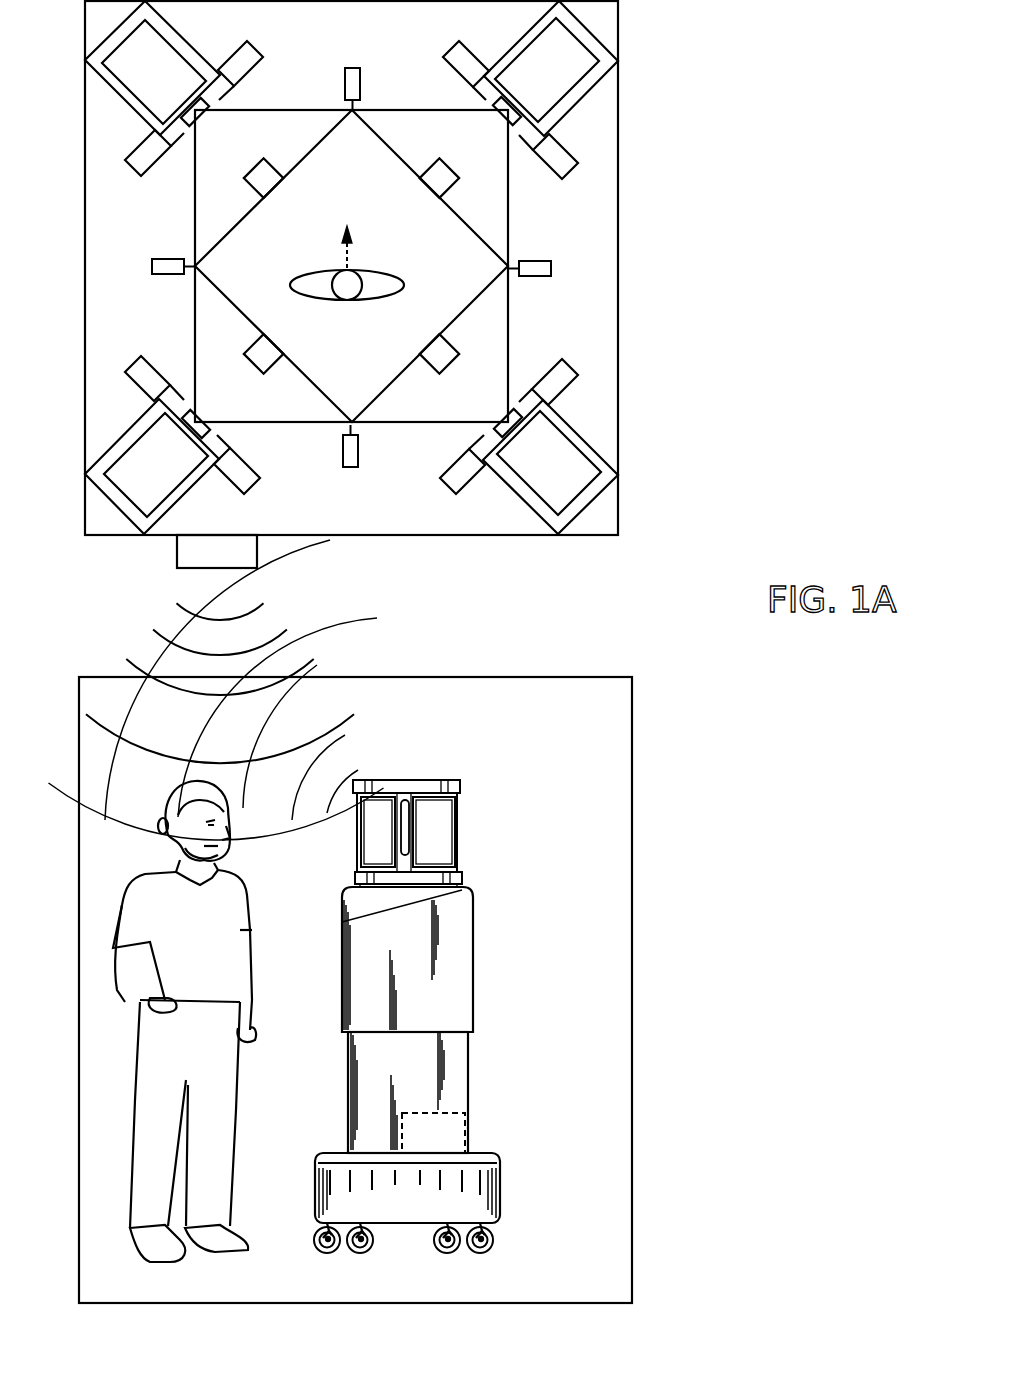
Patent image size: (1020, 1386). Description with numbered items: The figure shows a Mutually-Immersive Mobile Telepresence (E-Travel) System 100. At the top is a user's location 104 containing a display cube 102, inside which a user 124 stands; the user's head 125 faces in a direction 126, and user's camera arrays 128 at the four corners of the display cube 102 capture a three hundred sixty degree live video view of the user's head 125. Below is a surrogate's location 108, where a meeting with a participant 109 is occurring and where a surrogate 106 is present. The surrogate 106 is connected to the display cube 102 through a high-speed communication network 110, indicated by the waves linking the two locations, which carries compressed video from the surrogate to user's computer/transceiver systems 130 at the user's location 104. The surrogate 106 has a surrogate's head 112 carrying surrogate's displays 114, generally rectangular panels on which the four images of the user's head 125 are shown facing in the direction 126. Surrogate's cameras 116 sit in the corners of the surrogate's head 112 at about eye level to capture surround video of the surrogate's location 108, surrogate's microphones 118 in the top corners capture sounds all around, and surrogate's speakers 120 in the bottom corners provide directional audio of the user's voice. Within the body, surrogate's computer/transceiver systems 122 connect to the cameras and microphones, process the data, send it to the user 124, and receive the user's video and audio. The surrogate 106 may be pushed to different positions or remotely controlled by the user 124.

The Mutually-Immersive Mobile Telepresence (E-Travel) System 100 is at (698, 722).
The display cube 102 is at (462, 310).
The user's location 104 is at (345, 38).
The surrogate 106 is at (434, 988).
The surrogate's location 108 is at (593, 731).
The participant 109 is at (213, 913).
The high-speed communication network 110 is at (415, 622).
The surrogate's head 112 is at (443, 803).
The surrogate's displays 114 is at (424, 780).
The surrogate's cameras 116 is at (385, 843).
The surrogate's microphones 118 is at (403, 780).
The surrogate's speakers 120 is at (440, 880).
The surrogate's computer/transceiver systems 122 is at (450, 1145).
The user 124 is at (285, 278).
The user's head 125 is at (362, 300).
The direction 126 is at (352, 258).
The user's camera arrays 128 is at (362, 84).
The user's computer/transceiver systems 130 is at (237, 563).